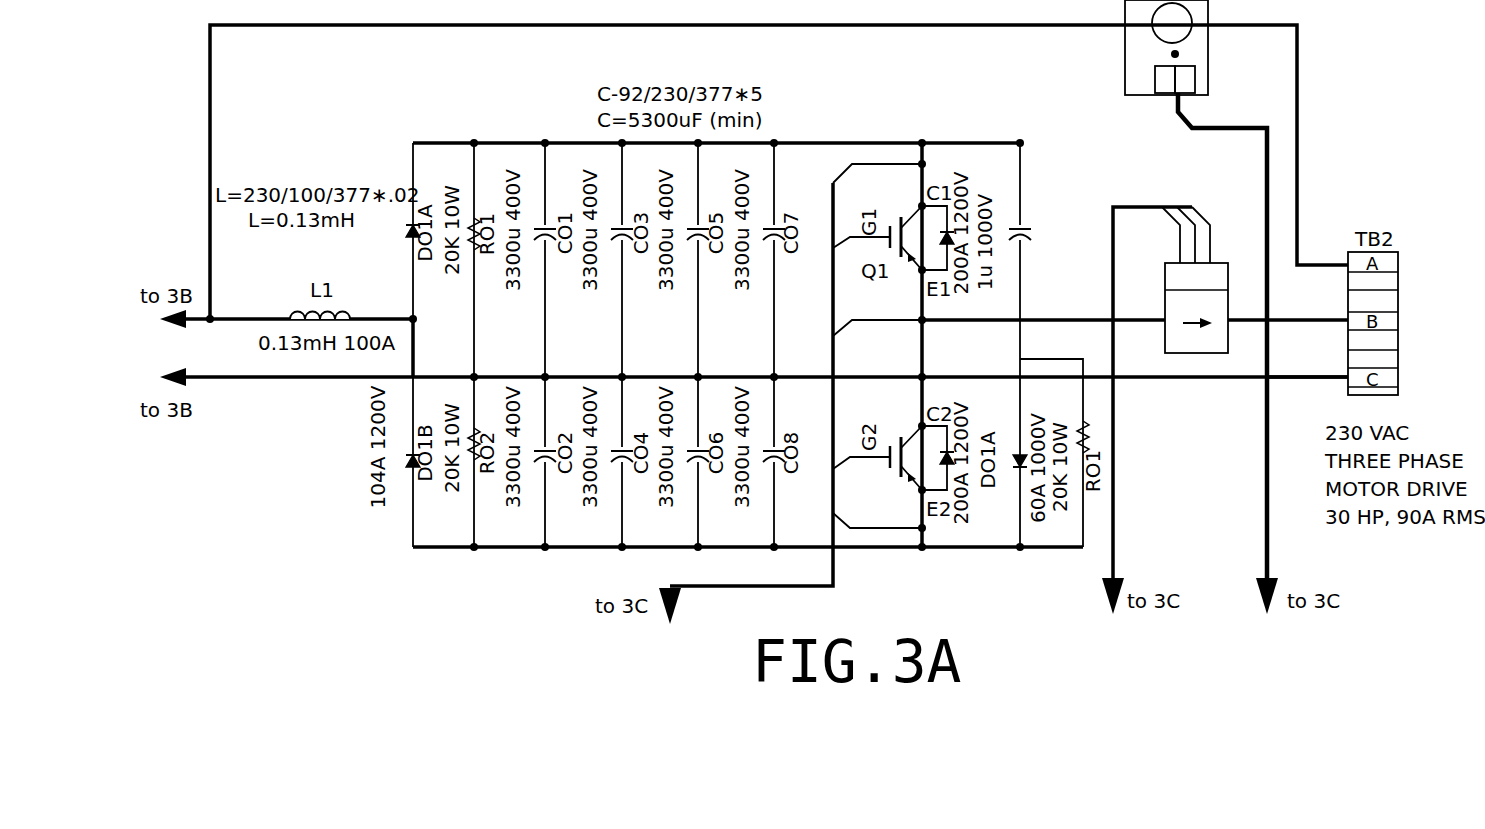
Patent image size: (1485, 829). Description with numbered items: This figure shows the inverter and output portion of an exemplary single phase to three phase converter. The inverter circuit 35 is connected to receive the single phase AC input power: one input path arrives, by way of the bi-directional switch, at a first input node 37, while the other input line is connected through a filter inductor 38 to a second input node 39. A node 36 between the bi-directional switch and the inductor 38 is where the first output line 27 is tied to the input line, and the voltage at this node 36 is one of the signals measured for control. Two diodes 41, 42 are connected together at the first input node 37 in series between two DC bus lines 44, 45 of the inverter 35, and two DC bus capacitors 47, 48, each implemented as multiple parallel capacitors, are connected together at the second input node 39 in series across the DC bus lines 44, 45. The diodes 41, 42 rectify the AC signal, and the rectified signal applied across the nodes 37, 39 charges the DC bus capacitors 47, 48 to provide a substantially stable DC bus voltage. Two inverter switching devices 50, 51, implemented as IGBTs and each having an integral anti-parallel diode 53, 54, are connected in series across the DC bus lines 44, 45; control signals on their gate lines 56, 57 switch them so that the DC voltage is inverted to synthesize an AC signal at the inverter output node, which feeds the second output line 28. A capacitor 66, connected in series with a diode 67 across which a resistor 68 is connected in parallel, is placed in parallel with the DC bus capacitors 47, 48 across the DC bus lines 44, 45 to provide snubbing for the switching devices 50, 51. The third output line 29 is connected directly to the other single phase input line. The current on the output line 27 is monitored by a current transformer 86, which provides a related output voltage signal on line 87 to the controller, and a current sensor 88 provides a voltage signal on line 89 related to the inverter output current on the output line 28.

The output line 27 is at (1297, 163).
The output line 28 is at (1297, 320).
The output line 29 is at (1297, 377).
The inverter circuit 35 is at (443, 143).
The node 36 is at (212, 321).
The first input node 37 is at (413, 320).
The filter inductor 38 is at (296, 312).
The second input node 39 is at (545, 376).
The diode 41 is at (413, 226).
The diode 42 is at (414, 456).
The DC bus line 44 is at (848, 143).
The DC bus line 45 is at (504, 549).
The DC bus capacitor 47 is at (545, 242).
The DC bus capacitor 48 is at (545, 464).
The inverter switching device 50 is at (913, 221).
The inverter switching device 51 is at (913, 440).
The anti-parallel diode 53 is at (948, 230).
The anti-parallel diode 54 is at (948, 450).
The gate line 56 is at (850, 238).
The gate line 57 is at (877, 492).
The capacitor 66 is at (1026, 230).
The diode 67 is at (1018, 468).
The resistor 68 is at (1084, 455).
The current transformer 86 is at (1126, 96).
The line 87 is at (1267, 163).
The current sensor 88 is at (1166, 262).
The line 89 is at (1115, 477).